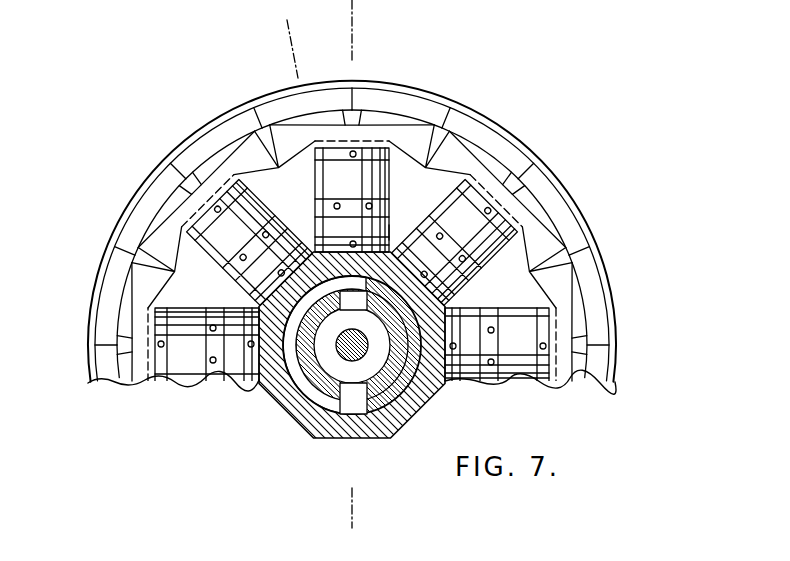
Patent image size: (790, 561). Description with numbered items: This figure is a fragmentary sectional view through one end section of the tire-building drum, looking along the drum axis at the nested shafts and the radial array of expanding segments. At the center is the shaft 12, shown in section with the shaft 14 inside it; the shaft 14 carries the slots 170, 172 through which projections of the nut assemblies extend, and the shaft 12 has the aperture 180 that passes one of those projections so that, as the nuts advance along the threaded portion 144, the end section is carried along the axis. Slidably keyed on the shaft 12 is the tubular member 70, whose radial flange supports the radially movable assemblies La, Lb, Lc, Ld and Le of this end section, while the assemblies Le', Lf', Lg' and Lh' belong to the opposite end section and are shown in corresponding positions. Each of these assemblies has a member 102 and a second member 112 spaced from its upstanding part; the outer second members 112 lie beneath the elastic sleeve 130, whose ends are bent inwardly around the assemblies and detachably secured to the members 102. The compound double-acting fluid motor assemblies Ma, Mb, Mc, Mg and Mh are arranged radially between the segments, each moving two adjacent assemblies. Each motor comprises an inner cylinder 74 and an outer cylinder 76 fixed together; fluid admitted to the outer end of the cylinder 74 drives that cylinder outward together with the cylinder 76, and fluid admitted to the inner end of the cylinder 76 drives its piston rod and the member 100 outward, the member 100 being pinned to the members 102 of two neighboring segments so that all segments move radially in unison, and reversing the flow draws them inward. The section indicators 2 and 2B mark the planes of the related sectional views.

The section line 2B is at (288, 30).
The section line 2 is at (362, 507).
The elastic sleeve 130 is at (530, 157).
The second member 112 is at (578, 236).
The radially movable assembly La is at (338, 81).
The radially movable assembly Lb is at (223, 117).
The radially movable assembly Lc is at (149, 186).
The radially movable assembly Ld is at (99, 300).
The radially movable assembly Le is at (84, 371).
The radially movable assembly Lh' is at (397, 85).
The radially movable assembly Lg' is at (489, 134).
The radially movable assembly Lf' is at (567, 214).
The radially movable assembly Le' is at (615, 316).
The member 100 is at (293, 181).
The member of assembly L 102 is at (174, 271).
The outer cylinder 76 is at (440, 203).
The inner cylinder 74 is at (390, 232).
The motor assembly Ma is at (352, 196).
The motor assembly Mb is at (247, 240).
The motor assembly Mc is at (203, 345).
The motor assembly Mh is at (457, 240).
The motor assembly Mg is at (500, 345).
The shaft 12 is at (362, 313).
The tubular member 70 is at (428, 406).
The shaft 14 is at (322, 392).
The aperture 180 is at (303, 391).
The slot 170 is at (357, 300).
The slot 172 is at (343, 438).
The threaded portion 144 is at (362, 360).